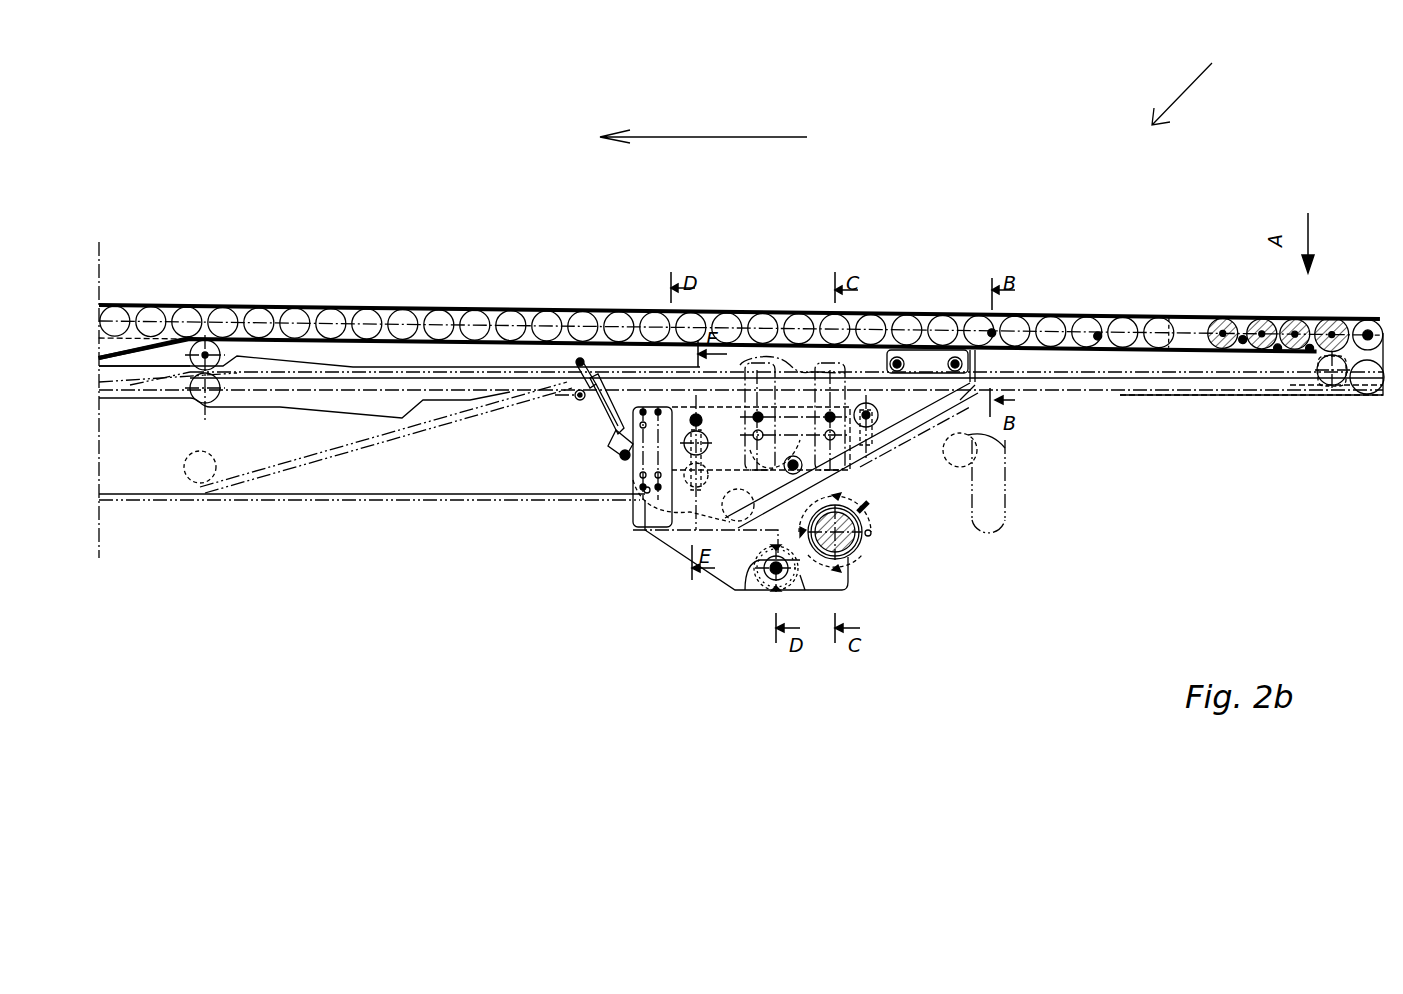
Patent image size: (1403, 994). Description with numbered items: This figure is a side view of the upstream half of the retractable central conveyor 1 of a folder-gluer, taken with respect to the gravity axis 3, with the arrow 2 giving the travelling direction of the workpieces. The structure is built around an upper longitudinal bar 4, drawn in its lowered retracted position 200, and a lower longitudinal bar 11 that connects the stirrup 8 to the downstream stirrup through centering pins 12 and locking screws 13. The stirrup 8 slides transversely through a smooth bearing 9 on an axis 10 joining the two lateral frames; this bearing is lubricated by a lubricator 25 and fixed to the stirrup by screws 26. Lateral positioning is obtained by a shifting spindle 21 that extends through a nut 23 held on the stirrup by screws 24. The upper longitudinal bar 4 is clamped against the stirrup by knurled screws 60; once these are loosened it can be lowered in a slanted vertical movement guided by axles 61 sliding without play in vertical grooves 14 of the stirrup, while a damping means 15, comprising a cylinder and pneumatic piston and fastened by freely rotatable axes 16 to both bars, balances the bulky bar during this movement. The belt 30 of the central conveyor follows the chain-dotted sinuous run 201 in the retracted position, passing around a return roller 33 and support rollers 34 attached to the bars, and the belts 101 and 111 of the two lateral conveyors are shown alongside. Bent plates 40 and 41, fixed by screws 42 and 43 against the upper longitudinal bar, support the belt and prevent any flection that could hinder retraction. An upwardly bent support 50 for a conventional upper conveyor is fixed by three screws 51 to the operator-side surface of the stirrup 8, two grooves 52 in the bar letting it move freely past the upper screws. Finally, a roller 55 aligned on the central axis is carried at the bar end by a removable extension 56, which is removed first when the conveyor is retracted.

The retractable central conveyor 1 is at (1185, 88).
The arrow 2 is at (714, 137).
The gravity axis 3 is at (99, 257).
The upper longitudinal bar 4 is at (308, 355).
The stirrup 8 is at (817, 585).
The smooth bearing 9 is at (856, 548).
The axis 10 is at (858, 528).
The lower longitudinal bar 11 is at (405, 462).
The centering pins 12 is at (640, 475).
The locking screws 13 is at (645, 490).
The vertical grooves 14 is at (868, 428).
The damping means 15 is at (602, 398).
The axes 16 is at (580, 360).
The shifting spindle 21 is at (753, 560).
The nut 23 is at (772, 578).
The screws 24 is at (778, 592).
The lubricator 25 is at (865, 505).
The screws 26 is at (850, 572).
The belt 30 is at (127, 355).
The return roller 33 is at (205, 340).
The support rollers 34 is at (637, 281).
The plate 40 is at (1183, 289).
The plate 41 is at (923, 362).
The screws 42 is at (1169, 288).
The screws 43 is at (897, 360).
The upwardly bent support 50 is at (780, 358).
The screws 51 is at (793, 460).
The grooves 52 is at (765, 362).
The roller 55 is at (1378, 291).
The removable extension 56 is at (1335, 352).
The knurled screws 60 is at (700, 425).
The axles 61 is at (694, 418).
The belt 101 is at (258, 470).
The belt 111 is at (150, 500).
The retracted position 200 is at (950, 412).
The sinuous run 201 is at (168, 378).